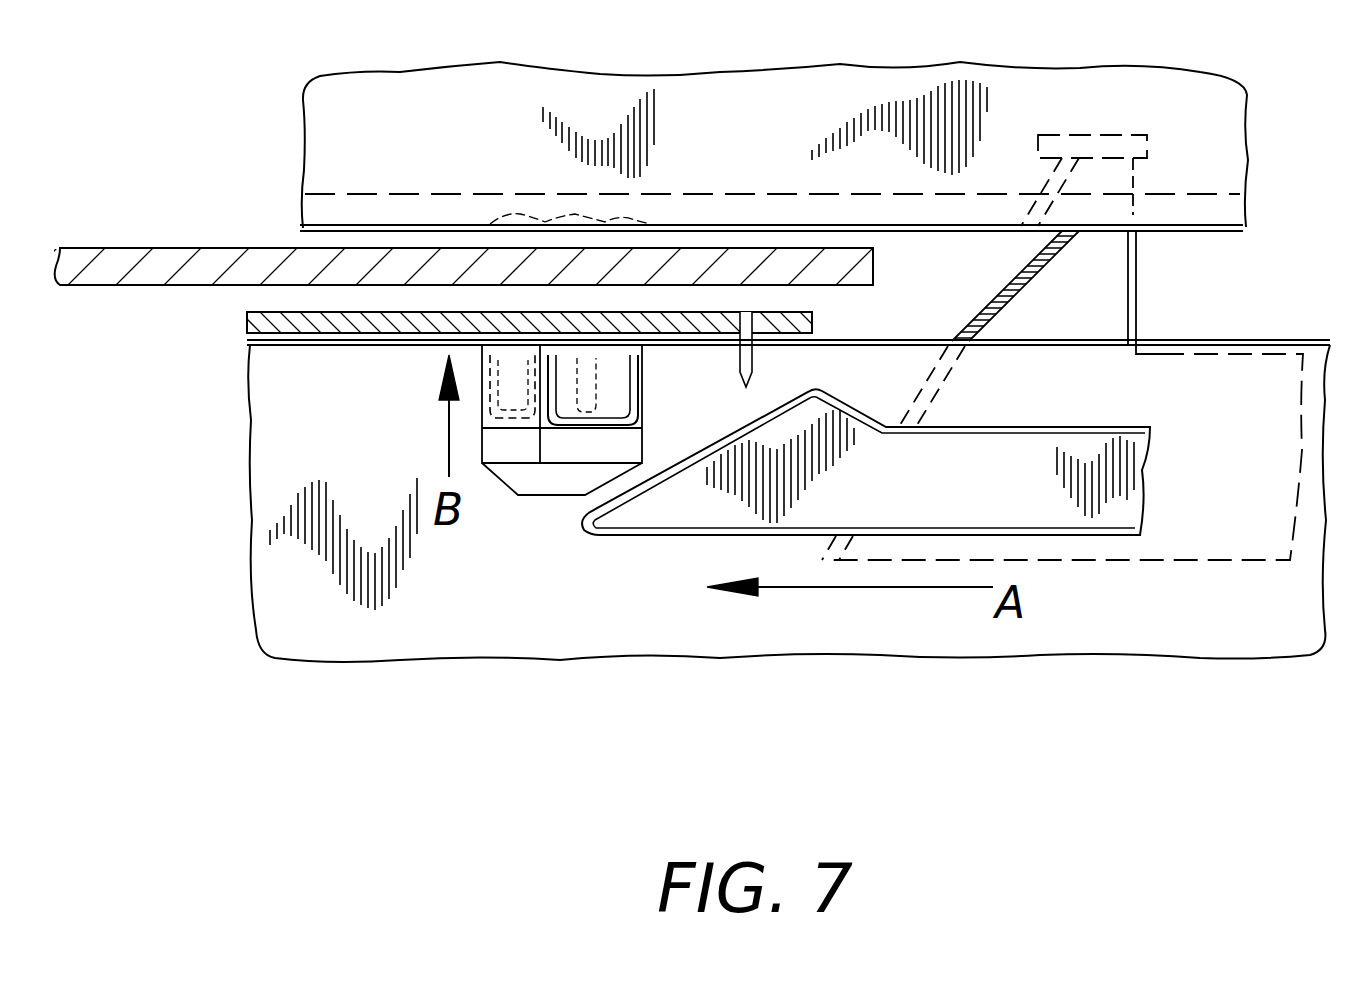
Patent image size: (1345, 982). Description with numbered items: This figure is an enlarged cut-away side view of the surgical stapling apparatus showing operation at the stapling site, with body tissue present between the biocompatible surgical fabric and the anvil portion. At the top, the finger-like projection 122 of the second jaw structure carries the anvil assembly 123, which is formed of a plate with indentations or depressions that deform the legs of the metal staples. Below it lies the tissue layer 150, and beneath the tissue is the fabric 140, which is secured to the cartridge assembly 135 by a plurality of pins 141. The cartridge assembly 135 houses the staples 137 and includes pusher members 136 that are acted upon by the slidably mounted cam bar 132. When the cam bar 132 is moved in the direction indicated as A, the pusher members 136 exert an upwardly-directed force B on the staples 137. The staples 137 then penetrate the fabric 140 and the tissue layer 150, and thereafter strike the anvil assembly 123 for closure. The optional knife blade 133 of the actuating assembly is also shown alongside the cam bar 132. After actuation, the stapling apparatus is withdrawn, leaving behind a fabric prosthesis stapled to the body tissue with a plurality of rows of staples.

The finger-like projection 122 is at (770, 148).
The anvil assembly 123 is at (914, 233).
The tissue layer 150 is at (195, 248).
The fabric 140 is at (248, 305).
The pins 141 is at (753, 360).
The staples 137 is at (640, 388).
The pusher members 136 is at (545, 480).
The cartridge assembly 135 is at (787, 617).
The cam bar 132 is at (982, 498).
The knife blade 133 is at (1084, 303).